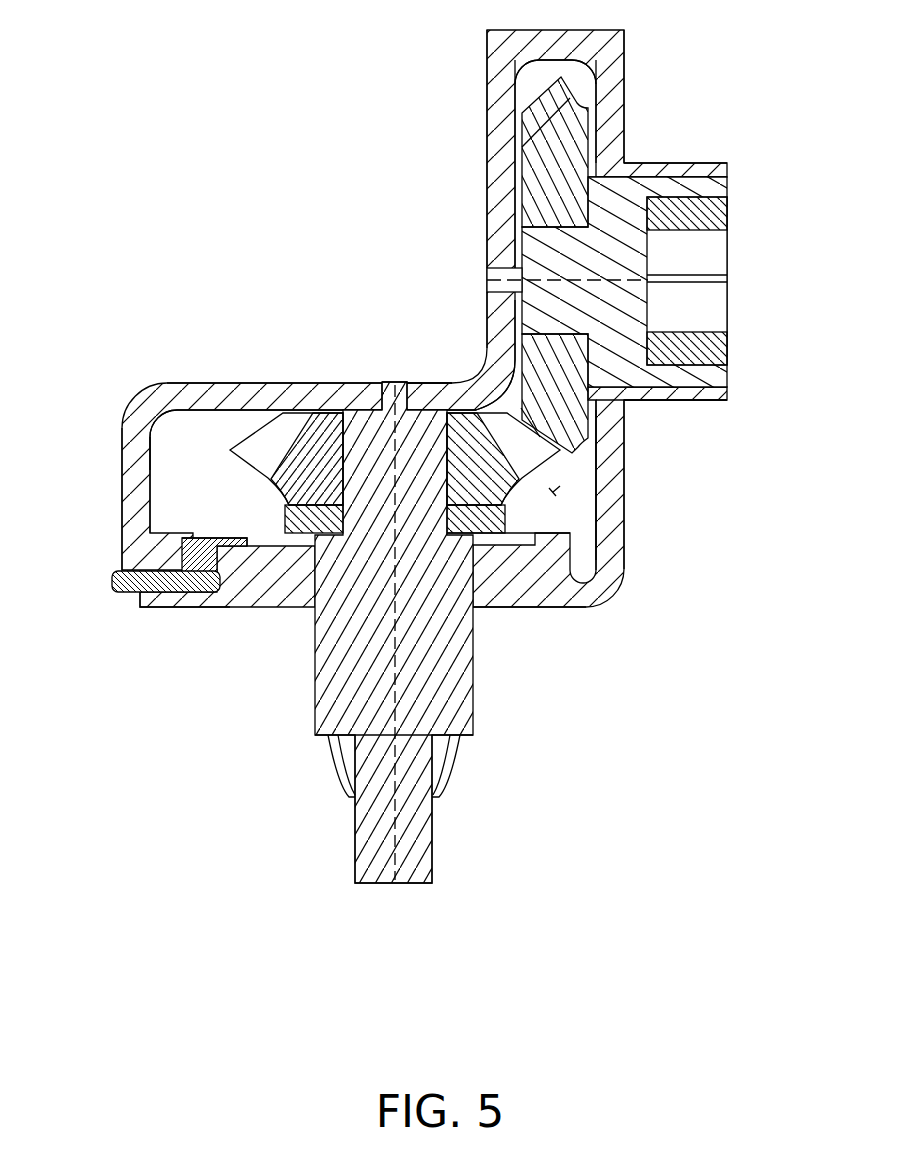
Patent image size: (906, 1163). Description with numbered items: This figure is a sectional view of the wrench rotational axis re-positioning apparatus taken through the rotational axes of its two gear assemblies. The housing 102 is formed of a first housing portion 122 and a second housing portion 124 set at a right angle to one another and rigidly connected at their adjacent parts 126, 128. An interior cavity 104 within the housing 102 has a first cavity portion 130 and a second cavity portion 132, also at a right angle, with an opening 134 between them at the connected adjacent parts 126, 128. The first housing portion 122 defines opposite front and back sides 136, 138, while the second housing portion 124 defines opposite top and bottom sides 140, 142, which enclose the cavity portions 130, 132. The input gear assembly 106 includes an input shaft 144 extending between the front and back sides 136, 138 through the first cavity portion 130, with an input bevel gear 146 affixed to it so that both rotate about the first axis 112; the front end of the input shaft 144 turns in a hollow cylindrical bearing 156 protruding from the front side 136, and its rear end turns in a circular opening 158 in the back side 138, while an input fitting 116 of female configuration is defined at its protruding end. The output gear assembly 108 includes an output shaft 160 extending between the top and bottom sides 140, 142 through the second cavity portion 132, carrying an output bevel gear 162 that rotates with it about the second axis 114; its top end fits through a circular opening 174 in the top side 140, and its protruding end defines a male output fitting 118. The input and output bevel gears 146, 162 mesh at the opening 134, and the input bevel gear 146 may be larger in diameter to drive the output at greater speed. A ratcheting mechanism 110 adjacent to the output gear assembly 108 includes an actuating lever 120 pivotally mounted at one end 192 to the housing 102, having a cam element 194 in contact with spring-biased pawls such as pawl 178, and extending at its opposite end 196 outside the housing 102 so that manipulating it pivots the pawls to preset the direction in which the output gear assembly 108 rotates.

The housing 102 is at (414, 460).
The interior cavity 104 is at (520, 91).
The input gear assembly 106 is at (630, 393).
The output gear assembly 108 is at (377, 638).
The ratcheting mechanism 110 is at (181, 596).
The first axis 112 is at (608, 265).
The second axis 114 is at (400, 713).
The input fitting 116 is at (715, 256).
The output fitting 118 is at (402, 878).
The actuating lever 120 is at (110, 581).
The first housing portion 122 is at (395, 335).
The second housing portion 124 is at (424, 300).
The adjacent part of first housing portion 126 is at (420, 388).
The adjacent part of second housing portion 128 is at (493, 352).
The first cavity portion 130 is at (556, 66).
The second cavity portion 132 is at (168, 510).
The opening 134 is at (553, 492).
The front side 136 is at (618, 143).
The back side 138 is at (502, 157).
The top side 140 is at (215, 384).
The bottom side 142 is at (508, 603).
The input shaft 144 is at (643, 183).
The input bevel gear 146 is at (537, 178).
The hollow cylindrical bearing 156 is at (670, 402).
The circular opening 158 is at (500, 277).
The output shaft 160 is at (341, 638).
The output bevel gear 162 is at (290, 480).
The circular opening 174 is at (386, 383).
The pawl 178 is at (272, 522).
The one end of actuating lever 192 is at (150, 586).
The cam element 194 is at (185, 538).
The opposite end of actuating lever 196 is at (142, 598).